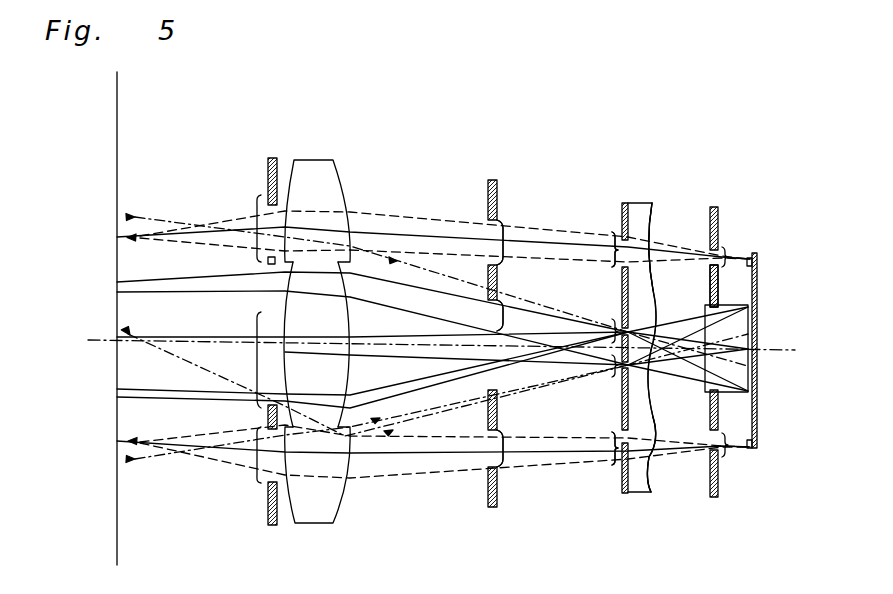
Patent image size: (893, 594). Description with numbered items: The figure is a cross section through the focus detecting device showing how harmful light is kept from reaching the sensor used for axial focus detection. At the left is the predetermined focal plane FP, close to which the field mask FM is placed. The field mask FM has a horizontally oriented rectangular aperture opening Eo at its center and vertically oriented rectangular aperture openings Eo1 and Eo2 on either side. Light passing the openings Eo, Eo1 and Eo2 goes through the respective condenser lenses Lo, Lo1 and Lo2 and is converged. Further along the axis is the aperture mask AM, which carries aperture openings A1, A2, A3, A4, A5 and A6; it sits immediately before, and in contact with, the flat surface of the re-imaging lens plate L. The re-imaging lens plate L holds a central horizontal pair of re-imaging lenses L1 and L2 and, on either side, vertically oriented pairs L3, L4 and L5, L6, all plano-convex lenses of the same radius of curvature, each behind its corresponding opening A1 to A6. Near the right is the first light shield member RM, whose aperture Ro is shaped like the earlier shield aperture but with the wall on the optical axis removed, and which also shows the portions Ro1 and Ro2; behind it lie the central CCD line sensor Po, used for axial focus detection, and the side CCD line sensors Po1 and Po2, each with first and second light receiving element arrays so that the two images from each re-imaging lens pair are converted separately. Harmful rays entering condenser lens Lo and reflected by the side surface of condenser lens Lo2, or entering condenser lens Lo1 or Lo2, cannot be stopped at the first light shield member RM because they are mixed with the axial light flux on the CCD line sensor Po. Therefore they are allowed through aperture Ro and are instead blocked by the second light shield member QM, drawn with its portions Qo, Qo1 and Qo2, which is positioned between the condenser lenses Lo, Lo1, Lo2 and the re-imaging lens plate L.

The predetermined focal plane FP is at (118, 124).
The rectangular aperture opening Eo is at (257, 316).
The rectangular aperture opening Eo1 is at (257, 201).
The rectangular aperture opening Eo2 is at (257, 477).
The field mask FM is at (279, 167).
The condenser lens Lo is at (341, 292).
The condenser lens Lo1 is at (336, 160).
The condenser lens Lo2 is at (346, 497).
The second light shield member QM is at (498, 181).
The aperture opening Qo is at (504, 324).
The aperture opening Qo1 is at (504, 226).
The aperture opening Qo2 is at (504, 462).
The aperture mask AM is at (622, 205).
The aperture opening A1 is at (613, 370).
The aperture opening A2 is at (613, 330).
The aperture opening A3 is at (613, 245).
The aperture opening A4 is at (615, 249).
The aperture opening A5 is at (613, 460).
The aperture opening A6 is at (615, 448).
The re-imaging lens plate L is at (652, 204).
The re-imaging lens L1 is at (652, 389).
The re-imaging lens L2 is at (652, 311).
The re-imaging lens L3 is at (652, 233).
The re-imaging lens L4 is at (651, 246).
The re-imaging lens L5 is at (652, 460).
The re-imaging lens L6 is at (651, 454).
The first light shield member RM is at (719, 208).
The aperture Ro is at (706, 308).
The mask opening Ro1 is at (726, 251).
The mask opening Ro2 is at (726, 458).
The CCD line sensor Po is at (749, 308).
The CCD line sensor Po1 is at (750, 257).
The CCD line sensor Po2 is at (750, 449).